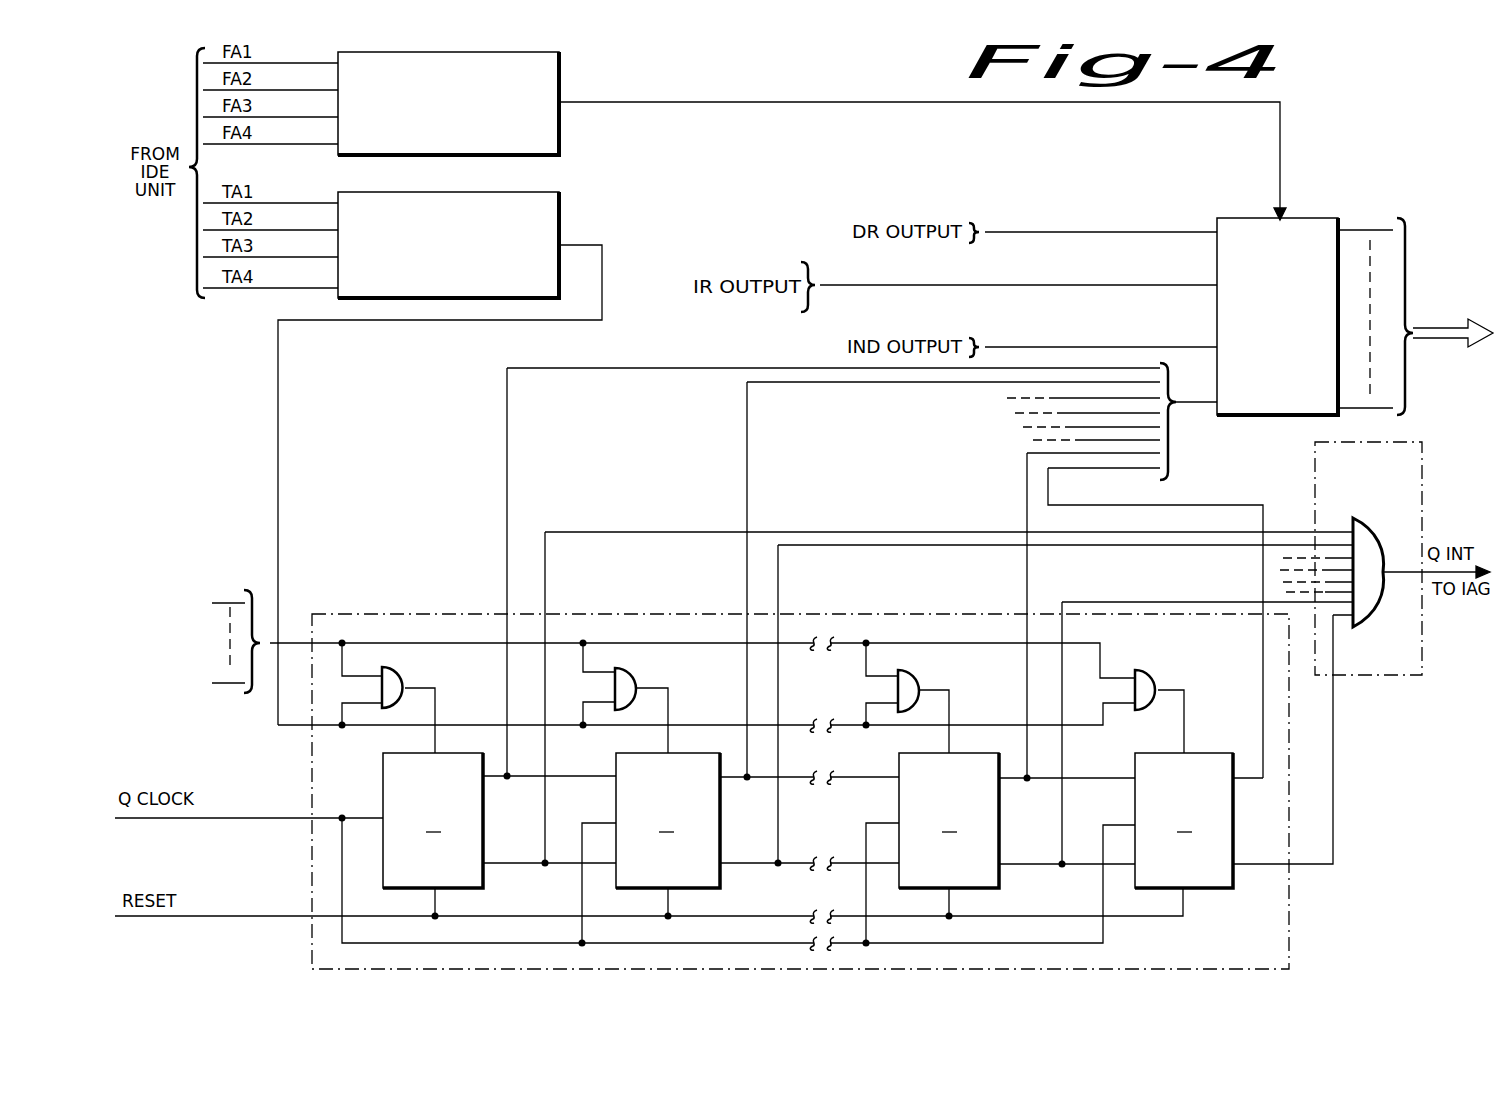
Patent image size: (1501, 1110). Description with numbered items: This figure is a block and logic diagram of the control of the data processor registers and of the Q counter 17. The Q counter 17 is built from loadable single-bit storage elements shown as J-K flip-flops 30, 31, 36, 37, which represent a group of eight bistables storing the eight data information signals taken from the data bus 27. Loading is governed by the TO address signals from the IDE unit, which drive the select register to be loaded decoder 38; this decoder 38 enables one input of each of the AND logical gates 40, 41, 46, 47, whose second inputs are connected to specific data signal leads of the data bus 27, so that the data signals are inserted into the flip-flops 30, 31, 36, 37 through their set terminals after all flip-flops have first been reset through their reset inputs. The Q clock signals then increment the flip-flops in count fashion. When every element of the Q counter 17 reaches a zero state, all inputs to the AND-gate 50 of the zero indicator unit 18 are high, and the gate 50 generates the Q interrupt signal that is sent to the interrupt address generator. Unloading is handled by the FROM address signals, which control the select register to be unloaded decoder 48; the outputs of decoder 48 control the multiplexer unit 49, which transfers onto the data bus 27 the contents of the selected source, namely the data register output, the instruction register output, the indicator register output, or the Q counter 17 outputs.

The select register to be unloaded decoder 48 is at (560, 55).
The select register to be loaded decoder 38 is at (560, 197).
The multiplexer unit 49 is at (1238, 221).
The data bus 27 is at (805, 450).
The Q counter 17 is at (438, 613).
The zero indicator unit 18 is at (1405, 668).
The AND-gate 50 is at (1368, 618).
The AND logical gate 40 is at (404, 669).
The AND logical gate 41 is at (636, 670).
The AND logical gate 46 is at (919, 671).
The AND logical gate 47 is at (1157, 671).
The J-K flip-flop 30 is at (484, 890).
The J-K flip-flop 31 is at (720, 890).
The J-K flip-flop 36 is at (1000, 890).
The J-K flip-flop 37 is at (1234, 890).